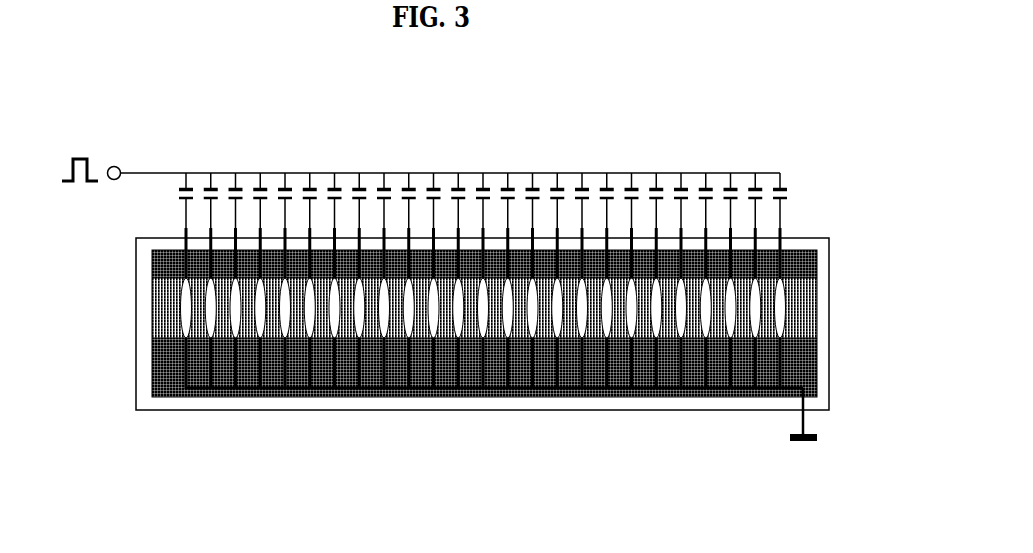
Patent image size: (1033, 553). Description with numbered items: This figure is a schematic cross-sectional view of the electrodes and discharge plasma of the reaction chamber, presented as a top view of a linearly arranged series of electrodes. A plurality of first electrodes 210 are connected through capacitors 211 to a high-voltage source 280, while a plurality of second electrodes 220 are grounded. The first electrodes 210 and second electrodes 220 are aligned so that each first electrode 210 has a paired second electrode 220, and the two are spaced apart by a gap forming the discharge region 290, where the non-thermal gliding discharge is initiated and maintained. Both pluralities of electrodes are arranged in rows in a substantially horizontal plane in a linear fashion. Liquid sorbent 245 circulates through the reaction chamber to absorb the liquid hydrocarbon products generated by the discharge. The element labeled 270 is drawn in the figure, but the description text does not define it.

The first electrodes 210 is at (556, 238).
The capacitors 211 is at (676, 187).
The second electrodes 220 is at (453, 391).
The sorbent 245 is at (174, 288).
The plasma discharge regions 270 is at (174, 323).
The high-voltage source 280 is at (117, 125).
The discharge region 290 is at (409, 310).